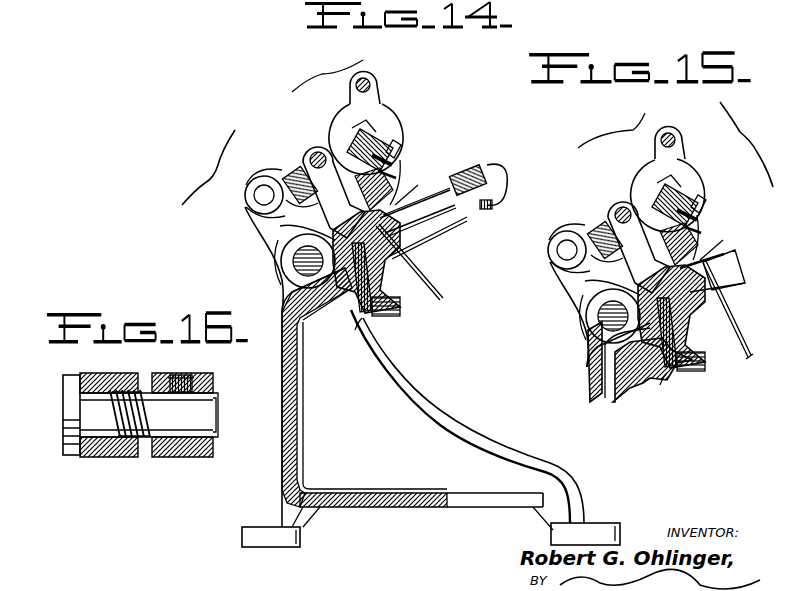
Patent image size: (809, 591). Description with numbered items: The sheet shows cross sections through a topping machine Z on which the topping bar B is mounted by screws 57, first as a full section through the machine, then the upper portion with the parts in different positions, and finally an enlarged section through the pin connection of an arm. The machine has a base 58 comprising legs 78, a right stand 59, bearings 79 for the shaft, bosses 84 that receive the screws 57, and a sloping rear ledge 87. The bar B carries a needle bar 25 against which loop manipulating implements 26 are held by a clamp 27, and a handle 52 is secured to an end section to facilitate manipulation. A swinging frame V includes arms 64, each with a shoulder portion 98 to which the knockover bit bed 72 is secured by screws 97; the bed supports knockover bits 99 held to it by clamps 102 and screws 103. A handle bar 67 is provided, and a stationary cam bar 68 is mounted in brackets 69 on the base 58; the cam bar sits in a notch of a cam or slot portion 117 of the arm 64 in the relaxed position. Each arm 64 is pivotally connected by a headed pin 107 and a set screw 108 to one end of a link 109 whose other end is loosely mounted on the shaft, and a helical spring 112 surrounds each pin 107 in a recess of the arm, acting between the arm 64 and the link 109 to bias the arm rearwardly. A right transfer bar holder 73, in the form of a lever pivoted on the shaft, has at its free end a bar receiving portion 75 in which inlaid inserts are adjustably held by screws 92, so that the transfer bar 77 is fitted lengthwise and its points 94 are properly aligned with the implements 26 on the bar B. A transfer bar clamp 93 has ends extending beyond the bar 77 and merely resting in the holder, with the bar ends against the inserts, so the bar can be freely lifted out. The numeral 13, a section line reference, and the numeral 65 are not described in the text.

In FIG. 15, the rod 13 is at (738, 262).
In FIG. 14, the needle bar 25 is at (407, 257).
In FIG. 15, the needle bar 25 is at (700, 287).
In FIG. 14, the loop manipulating implements 26 is at (412, 200).
In FIG. 15, the loop manipulating implements 26 is at (715, 258).
In FIG. 14, the clamp 27 is at (300, 221).
In FIG. 15, the clamp 27 is at (585, 300).
In FIG. 14, the handle 52 is at (437, 292).
In FIG. 15, the handle 52 is at (745, 335).
In FIG. 14, the screws 57 is at (390, 317).
In FIG. 15, the screws 57 is at (695, 370).
In FIG. 14, the base 58 is at (420, 506).
In FIG. 14, the right stand 59 is at (433, 410).
In FIG. 14, the arms 64 is at (333, 136).
In FIG. 15, the arms 64 is at (640, 170).
In FIG. 16, the arms 64 is at (106, 455).
In FIG. 14, the pivot pin 65 is at (292, 261).
In FIG. 15, the pivot pin 65 is at (598, 318).
In FIG. 14, the handle bar 67 is at (370, 86).
In FIG. 15, the handle bar 67 is at (674, 140).
In FIG. 14, the cam bar 68 is at (320, 152).
In FIG. 15, the cam bar 68 is at (620, 208).
In FIG. 14, the brackets 69 is at (288, 222).
In FIG. 15, the brackets 69 is at (595, 277).
In FIG. 14, the knockover bit bed 72 is at (362, 133).
In FIG. 15, the knockover bit bed 72 is at (670, 188).
In FIG. 14, the right transfer bar holder 73 is at (447, 230).
In FIG. 14, the bar receiving portions 75 is at (504, 180).
In FIG. 14, the transfer bar 77 is at (508, 167).
In FIG. 14, the legs 78 is at (273, 540).
In FIG. 14, the bearings 79 is at (288, 276).
In FIG. 15, the bearings 79 is at (604, 395).
In FIG. 14, the bosses 84 is at (375, 300).
In FIG. 15, the bosses 84 is at (690, 352).
In FIG. 14, the sloping rear ledge 87 is at (300, 297).
In FIG. 15, the sloping rear ledge 87 is at (597, 350).
In FIG. 14, the screws 92 is at (490, 208).
In FIG. 14, the transfer bar clamp 93 is at (480, 167).
In FIG. 14, the points 94 is at (436, 200).
In FIG. 14, the screws 97 is at (385, 140).
In FIG. 15, the screws 97 is at (690, 195).
In FIG. 14, the shoulder portions 98 is at (396, 150).
In FIG. 15, the shoulder portions 98 is at (702, 220).
In FIG. 14, the knockover bits 99 is at (398, 172).
In FIG. 15, the knockover bits 99 is at (704, 232).
In FIG. 14, the clamps 102 is at (342, 207).
In FIG. 15, the clamps 102 is at (675, 165).
In FIG. 14, the screws 103 is at (394, 162).
In FIG. 15, the screws 103 is at (698, 212).
In FIG. 14, the headed pin 107 is at (262, 190).
In FIG. 15, the headed pin 107 is at (565, 252).
In FIG. 16, the headed pin 107 is at (67, 390).
In FIG. 16, the set screw 108 is at (180, 376).
In FIG. 14, the link 109 is at (268, 212).
In FIG. 15, the link 109 is at (575, 290).
In FIG. 16, the link 109 is at (198, 450).
In FIG. 16, the helical spring 112 is at (141, 440).
In FIG. 14, the cam or slot portion 117 is at (295, 168).
In FIG. 15, the cam or slot portion 117 is at (598, 225).
In FIG. 14, the bar B is at (355, 330).
In FIG. 15, the bar B is at (652, 380).
In FIG. 14, the swinging frame V is at (327, 73).
In FIG. 15, the swinging frame V is at (611, 128).
In FIG. 14, the topping machine Z is at (208, 167).
In FIG. 15, the topping machine Z is at (746, 144).